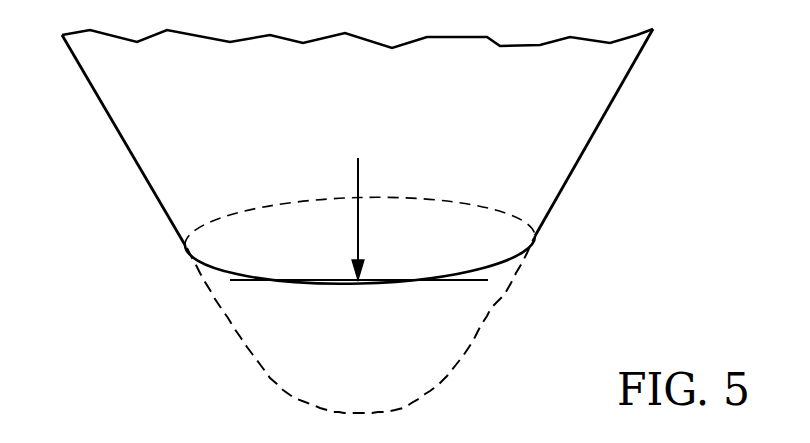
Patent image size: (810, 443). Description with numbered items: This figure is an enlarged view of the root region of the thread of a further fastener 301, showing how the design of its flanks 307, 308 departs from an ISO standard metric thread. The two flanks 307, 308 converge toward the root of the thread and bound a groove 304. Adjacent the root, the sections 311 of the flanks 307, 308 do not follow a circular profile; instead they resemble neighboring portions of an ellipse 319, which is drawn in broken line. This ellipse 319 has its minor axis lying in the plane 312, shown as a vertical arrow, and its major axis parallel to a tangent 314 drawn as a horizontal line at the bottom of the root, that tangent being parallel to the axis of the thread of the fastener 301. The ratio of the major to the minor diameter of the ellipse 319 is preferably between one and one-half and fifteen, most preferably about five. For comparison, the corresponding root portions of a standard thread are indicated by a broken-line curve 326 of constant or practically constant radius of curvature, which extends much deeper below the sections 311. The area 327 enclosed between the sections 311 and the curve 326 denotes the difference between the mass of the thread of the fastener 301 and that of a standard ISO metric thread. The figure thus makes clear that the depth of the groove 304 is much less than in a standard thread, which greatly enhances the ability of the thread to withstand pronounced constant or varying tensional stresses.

The fastener 301 is at (370, 139).
The groove 304 is at (205, 88).
The flank 307 is at (110, 133).
The flank 308 is at (595, 158).
The sections of the flanks 311 is at (217, 260).
The plane 312 is at (370, 168).
The tangent 314 is at (432, 288).
The ellipse 319 is at (426, 180).
The curve 326 is at (418, 418).
The area 327 is at (367, 383).